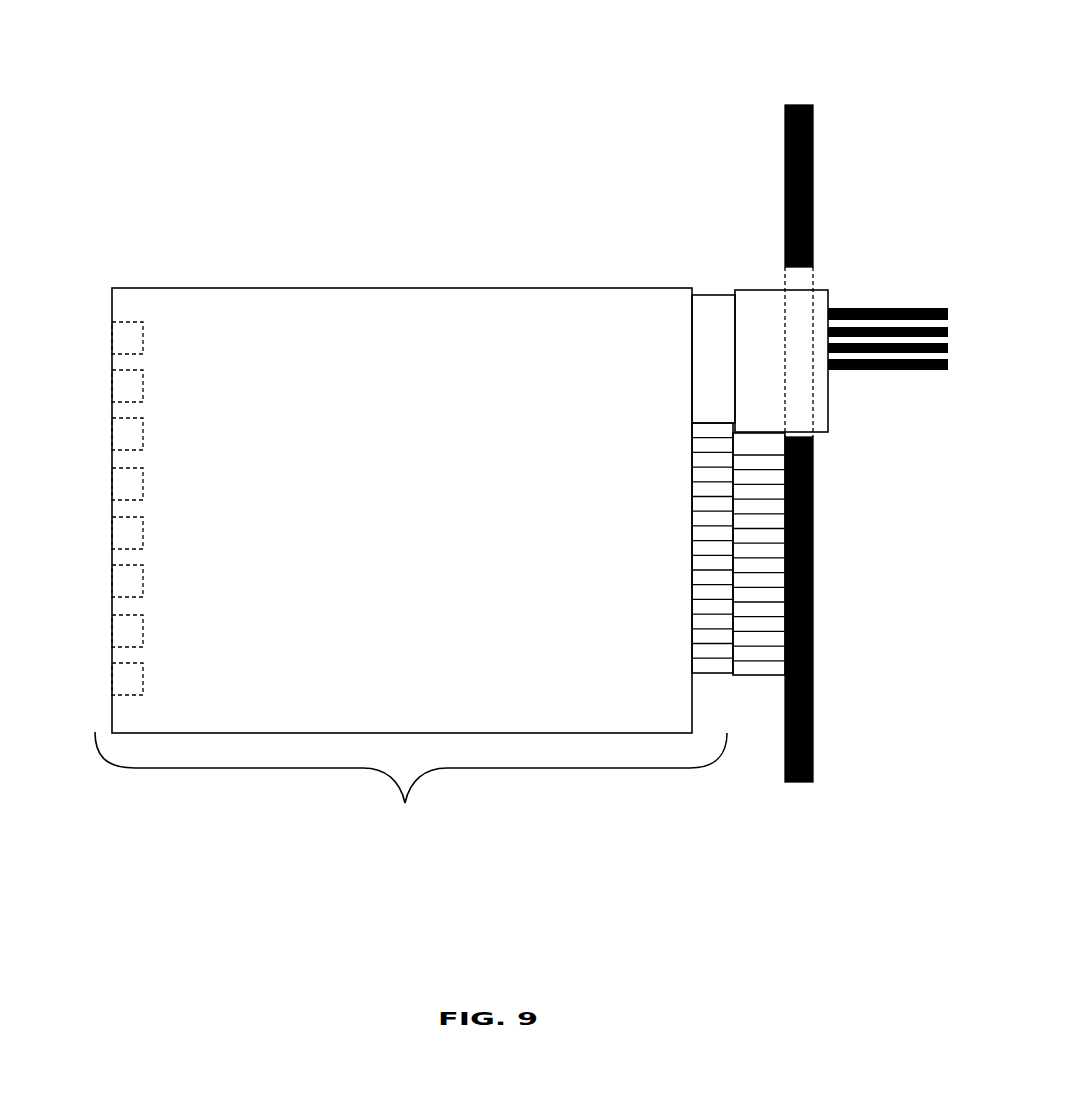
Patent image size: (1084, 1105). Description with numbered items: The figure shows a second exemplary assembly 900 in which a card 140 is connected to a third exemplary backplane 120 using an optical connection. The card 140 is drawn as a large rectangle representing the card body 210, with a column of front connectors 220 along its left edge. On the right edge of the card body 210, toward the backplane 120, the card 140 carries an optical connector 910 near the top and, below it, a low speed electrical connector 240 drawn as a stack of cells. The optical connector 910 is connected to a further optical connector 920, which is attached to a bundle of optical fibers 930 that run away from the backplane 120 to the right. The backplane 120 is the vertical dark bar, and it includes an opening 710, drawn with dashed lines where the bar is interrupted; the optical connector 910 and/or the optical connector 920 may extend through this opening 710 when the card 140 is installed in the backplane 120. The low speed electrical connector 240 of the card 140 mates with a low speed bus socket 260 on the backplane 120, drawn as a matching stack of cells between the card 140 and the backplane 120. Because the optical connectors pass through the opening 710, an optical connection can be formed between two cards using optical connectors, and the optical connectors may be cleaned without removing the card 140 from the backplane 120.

The assembly 900 is at (168, 95).
The backplane 120 is at (813, 162).
The opening 710 is at (805, 347).
The optical connector 920 is at (747, 290).
The optical fibers 930 is at (892, 370).
The optical connector 910 is at (692, 351).
The card body 210 is at (385, 288).
The front connectors 220 is at (118, 370).
The low speed electrical connector 240 is at (692, 613).
The low speed bus socket 260 is at (770, 675).
The card 140 is at (411, 794).